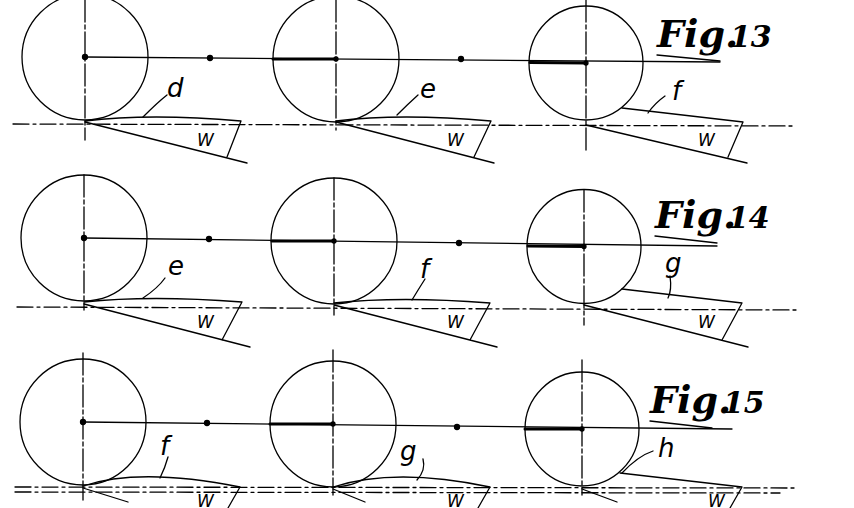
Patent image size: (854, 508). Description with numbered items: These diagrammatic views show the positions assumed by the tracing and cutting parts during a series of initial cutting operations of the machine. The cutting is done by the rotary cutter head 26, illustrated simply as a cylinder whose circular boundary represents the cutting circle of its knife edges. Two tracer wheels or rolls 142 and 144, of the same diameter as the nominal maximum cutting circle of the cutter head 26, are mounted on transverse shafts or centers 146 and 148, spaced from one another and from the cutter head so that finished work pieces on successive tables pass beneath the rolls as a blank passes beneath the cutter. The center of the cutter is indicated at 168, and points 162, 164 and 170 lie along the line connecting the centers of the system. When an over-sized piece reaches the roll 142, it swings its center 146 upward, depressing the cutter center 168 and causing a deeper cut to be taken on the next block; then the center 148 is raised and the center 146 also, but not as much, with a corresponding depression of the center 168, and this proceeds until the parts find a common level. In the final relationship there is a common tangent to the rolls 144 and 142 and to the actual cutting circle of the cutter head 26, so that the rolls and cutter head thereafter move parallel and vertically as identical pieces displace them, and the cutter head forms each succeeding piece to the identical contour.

In FIG. 13, the rotary cutter head 26 is at (540, 30).
In FIG. 14, the rotary cutter head 26 is at (537, 216).
In FIG. 15, the rotary cutter head 26 is at (534, 400).
In FIG. 13, the tracer roll 142 is at (380, 26).
In FIG. 14, the tracer roll 142 is at (378, 203).
In FIG. 15, the tracer roll 142 is at (367, 383).
In FIG. 13, the tracer roll 144 is at (137, 38).
In FIG. 14, the tracer roll 144 is at (133, 213).
In FIG. 15, the tracer roll 144 is at (135, 398).
In FIG. 13, the center 146 is at (336, 59).
In FIG. 14, the center 146 is at (334, 241).
In FIG. 15, the center 146 is at (333, 424).
In FIG. 13, the center 148 is at (85, 57).
In FIG. 14, the center 148 is at (84, 238).
In FIG. 15, the center 148 is at (83, 422).
In FIG. 13, the point on reference line 162 is at (210, 57).
In FIG. 14, the point on reference line 162 is at (209, 238).
In FIG. 15, the point on reference line 162 is at (207, 422).
In FIG. 13, the point on reference line 164 is at (273, 58).
In FIG. 14, the point on reference line 164 is at (272, 240).
In FIG. 15, the point on reference line 164 is at (270, 424).
In FIG. 13, the center of the cutter 168 is at (586, 63).
In FIG. 14, the center of the cutter 168 is at (584, 247).
In FIG. 15, the center of the cutter 168 is at (582, 429).
In FIG. 13, the point on reference line 170 is at (461, 59).
In FIG. 14, the point on reference line 170 is at (459, 243).
In FIG. 15, the point on reference line 170 is at (457, 427).